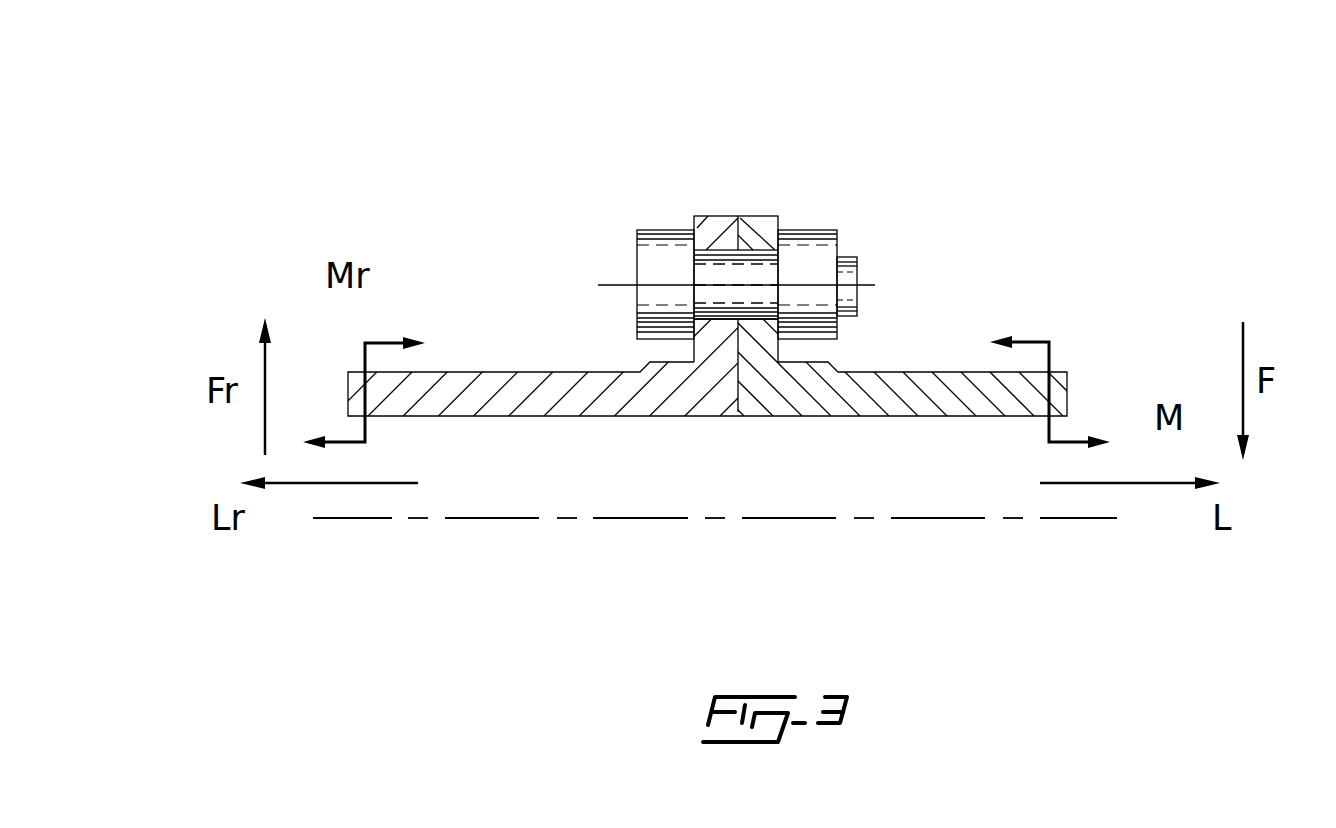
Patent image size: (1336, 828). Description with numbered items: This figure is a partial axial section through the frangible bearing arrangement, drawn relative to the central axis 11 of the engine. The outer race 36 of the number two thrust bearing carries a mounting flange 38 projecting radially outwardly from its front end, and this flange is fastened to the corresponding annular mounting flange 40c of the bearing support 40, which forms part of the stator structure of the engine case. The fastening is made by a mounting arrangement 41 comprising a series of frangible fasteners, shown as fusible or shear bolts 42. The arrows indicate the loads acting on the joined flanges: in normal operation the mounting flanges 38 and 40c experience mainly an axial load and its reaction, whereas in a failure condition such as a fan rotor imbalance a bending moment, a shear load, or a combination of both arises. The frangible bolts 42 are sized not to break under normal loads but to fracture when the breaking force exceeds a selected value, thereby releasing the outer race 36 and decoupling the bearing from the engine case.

The central axis 11 is at (912, 519).
The outer race 36 is at (528, 372).
The mounting flange 38 is at (690, 360).
The bearing support 40 is at (907, 372).
The mounting flange 40c is at (782, 359).
The mounting arrangement 41 is at (868, 184).
The frangible bolts 42 is at (857, 268).